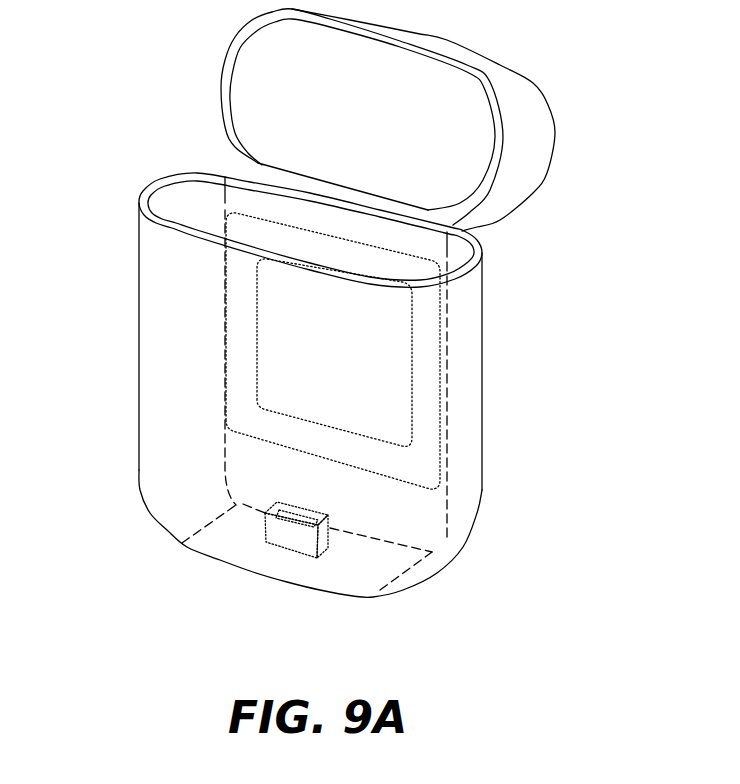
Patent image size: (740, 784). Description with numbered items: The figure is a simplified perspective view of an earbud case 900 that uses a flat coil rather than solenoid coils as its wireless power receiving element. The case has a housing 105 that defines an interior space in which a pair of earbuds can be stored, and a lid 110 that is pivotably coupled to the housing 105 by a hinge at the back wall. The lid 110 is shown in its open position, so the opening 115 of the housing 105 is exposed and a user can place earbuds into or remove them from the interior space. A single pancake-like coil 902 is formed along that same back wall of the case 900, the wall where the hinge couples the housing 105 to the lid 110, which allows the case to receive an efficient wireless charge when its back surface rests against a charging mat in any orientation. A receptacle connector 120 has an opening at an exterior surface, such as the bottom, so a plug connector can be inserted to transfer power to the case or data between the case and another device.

The earbud case 900 is at (199, 48).
The lid 110 is at (551, 102).
The housing 105 is at (483, 328).
The opening 115 is at (248, 197).
The pancake-like coil 902 is at (237, 340).
The receptacle connector 120 is at (265, 523).